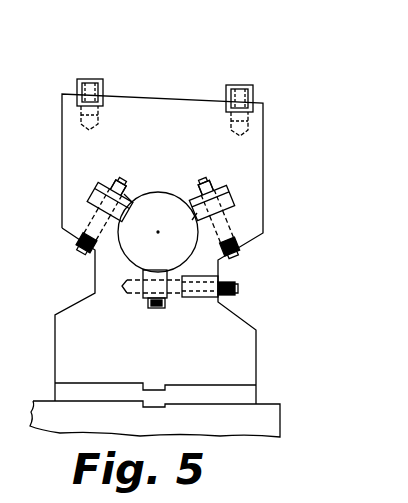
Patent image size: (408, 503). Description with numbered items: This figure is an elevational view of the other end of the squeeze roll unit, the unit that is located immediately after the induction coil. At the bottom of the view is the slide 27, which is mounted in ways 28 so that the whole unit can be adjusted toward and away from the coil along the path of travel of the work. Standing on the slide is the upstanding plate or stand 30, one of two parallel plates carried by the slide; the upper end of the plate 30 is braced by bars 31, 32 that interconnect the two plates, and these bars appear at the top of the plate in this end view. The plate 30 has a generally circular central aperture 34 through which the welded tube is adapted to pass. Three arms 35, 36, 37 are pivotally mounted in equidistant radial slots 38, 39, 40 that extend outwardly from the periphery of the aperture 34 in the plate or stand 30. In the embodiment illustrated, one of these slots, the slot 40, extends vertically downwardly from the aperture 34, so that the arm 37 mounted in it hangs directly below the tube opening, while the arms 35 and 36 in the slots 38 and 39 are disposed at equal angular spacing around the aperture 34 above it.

The slide 27 is at (257, 388).
The ways 28 is at (272, 423).
The plate 30 is at (264, 147).
The bar 31 is at (239, 86).
The bar 32 is at (96, 79).
The central aperture 34 is at (127, 258).
The arm 35 is at (212, 186).
The arm 36 is at (92, 194).
The arm 37 is at (152, 308).
The radial slot 38 is at (228, 197).
The radial slot 39 is at (97, 188).
The radial slot 40 is at (158, 308).